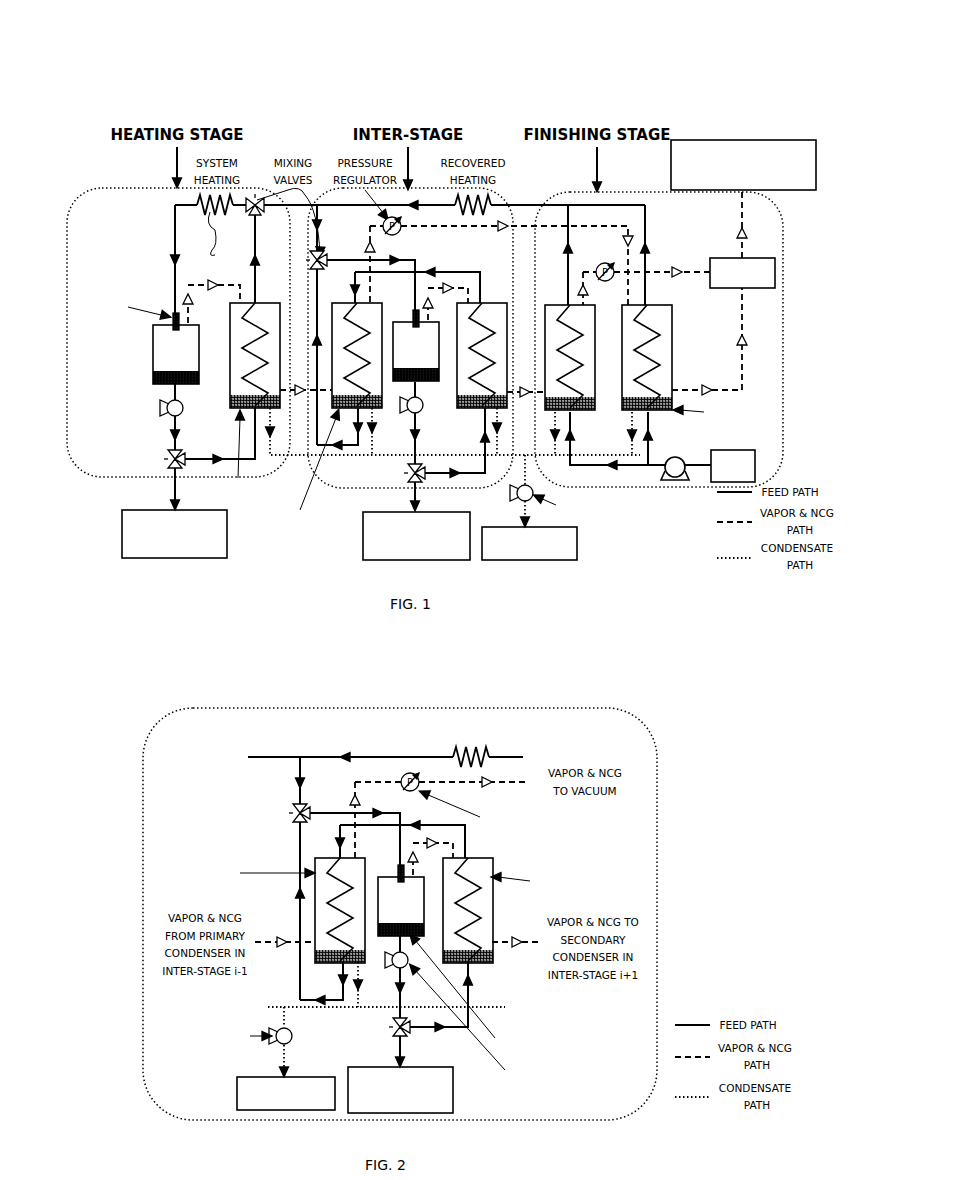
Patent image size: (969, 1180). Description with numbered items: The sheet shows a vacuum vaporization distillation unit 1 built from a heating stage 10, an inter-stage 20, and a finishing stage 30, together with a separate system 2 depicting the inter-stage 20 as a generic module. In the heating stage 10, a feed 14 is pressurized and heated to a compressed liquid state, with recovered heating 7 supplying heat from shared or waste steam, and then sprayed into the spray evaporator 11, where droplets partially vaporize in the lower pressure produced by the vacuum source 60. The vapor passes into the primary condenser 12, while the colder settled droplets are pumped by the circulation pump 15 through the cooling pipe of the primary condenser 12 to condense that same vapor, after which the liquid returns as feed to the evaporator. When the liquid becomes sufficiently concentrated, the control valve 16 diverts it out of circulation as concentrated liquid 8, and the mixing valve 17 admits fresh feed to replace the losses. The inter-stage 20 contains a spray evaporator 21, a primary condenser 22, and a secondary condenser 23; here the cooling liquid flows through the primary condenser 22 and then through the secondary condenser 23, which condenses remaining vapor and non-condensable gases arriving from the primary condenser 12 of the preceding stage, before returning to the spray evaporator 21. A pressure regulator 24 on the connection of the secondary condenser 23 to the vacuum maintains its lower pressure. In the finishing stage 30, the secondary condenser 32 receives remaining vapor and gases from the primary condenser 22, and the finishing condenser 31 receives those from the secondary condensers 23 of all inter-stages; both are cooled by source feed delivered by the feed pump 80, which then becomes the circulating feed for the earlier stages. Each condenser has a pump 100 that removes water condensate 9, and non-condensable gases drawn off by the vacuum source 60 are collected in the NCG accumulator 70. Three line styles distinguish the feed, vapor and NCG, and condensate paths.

In FIG. 1, the vacuum vaporization distillation unit 1 is at (676, 70).
In FIG. 2, the system 2 is at (578, 689).
In FIG. 1, the heating stage 10 is at (172, 120).
In FIG. 1, the inter-stage 20 is at (418, 126).
In FIG. 2, the inter-stage 20 is at (315, 708).
In FIG. 1, the finishing stage 30 is at (598, 126).
In FIG. 1, the recovered heating 7 is at (495, 200).
In FIG. 2, the recovered heating 7 is at (498, 744).
In FIG. 1, the concentrated liquid 8 is at (178, 565).
In FIG. 2, the concentrated liquid 8 is at (398, 1118).
In FIG. 1, the water condensate 9 is at (535, 568).
In FIG. 2, the water condensate 9 is at (280, 1115).
In FIG. 1, the spray evaporator 11 is at (150, 348).
In FIG. 1, the primary condenser 12 is at (234, 408).
In FIG. 1, the feed 14 is at (757, 466).
In FIG. 1, the circulation pump 15 is at (184, 408).
In FIG. 2, the circulation pump 15 is at (412, 968).
In FIG. 1, the control valve 16 is at (165, 465).
In FIG. 2, the control valve 16 is at (388, 1034).
In FIG. 1, the mixing valve 17 is at (326, 255).
In FIG. 2, the mixing valve 17 is at (292, 806).
In FIG. 1, the spray evaporator 21 is at (424, 390).
In FIG. 2, the spray evaporator 21 is at (425, 880).
In FIG. 1, the primary condenser 22 is at (490, 306).
In FIG. 2, the primary condenser 22 is at (495, 866).
In FIG. 1, the secondary condenser 23 is at (378, 306).
In FIG. 2, the secondary condenser 23 is at (316, 860).
In FIG. 1, the pressure regulator 24 is at (402, 236).
In FIG. 2, the pressure regulator 24 is at (403, 775).
In FIG. 1, the finishing condenser 31 is at (680, 358).
In FIG. 1, the secondary condenser 32 is at (594, 358).
In FIG. 1, the vacuum source 60 is at (780, 282).
In FIG. 1, the NCG accumulator 70 is at (768, 142).
In FIG. 1, the feed pump 80 is at (660, 487).
In FIG. 1, the pump 100 is at (535, 474).
In FIG. 2, the pump 100 is at (276, 1028).